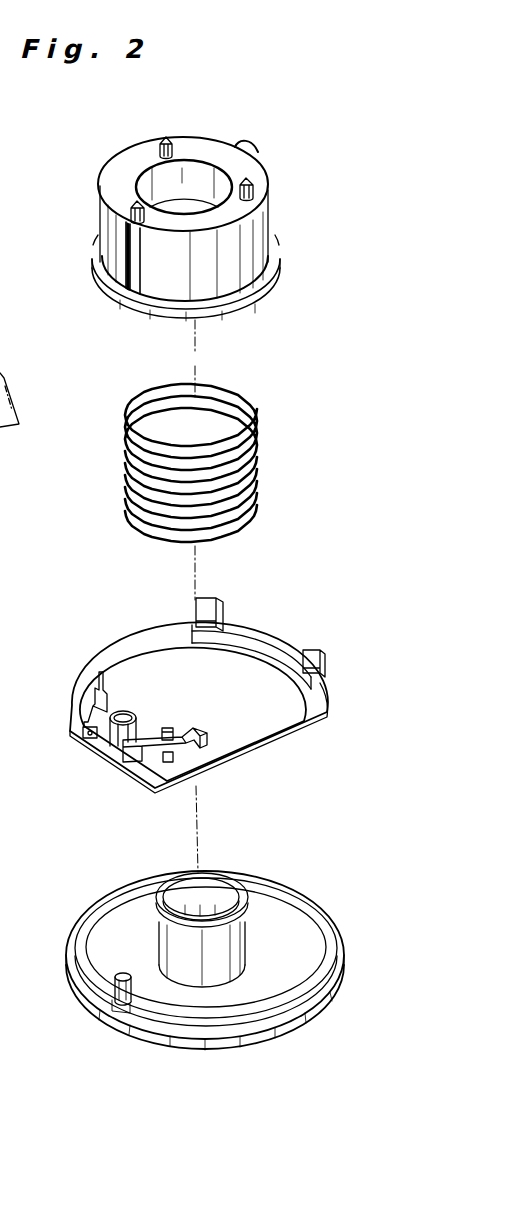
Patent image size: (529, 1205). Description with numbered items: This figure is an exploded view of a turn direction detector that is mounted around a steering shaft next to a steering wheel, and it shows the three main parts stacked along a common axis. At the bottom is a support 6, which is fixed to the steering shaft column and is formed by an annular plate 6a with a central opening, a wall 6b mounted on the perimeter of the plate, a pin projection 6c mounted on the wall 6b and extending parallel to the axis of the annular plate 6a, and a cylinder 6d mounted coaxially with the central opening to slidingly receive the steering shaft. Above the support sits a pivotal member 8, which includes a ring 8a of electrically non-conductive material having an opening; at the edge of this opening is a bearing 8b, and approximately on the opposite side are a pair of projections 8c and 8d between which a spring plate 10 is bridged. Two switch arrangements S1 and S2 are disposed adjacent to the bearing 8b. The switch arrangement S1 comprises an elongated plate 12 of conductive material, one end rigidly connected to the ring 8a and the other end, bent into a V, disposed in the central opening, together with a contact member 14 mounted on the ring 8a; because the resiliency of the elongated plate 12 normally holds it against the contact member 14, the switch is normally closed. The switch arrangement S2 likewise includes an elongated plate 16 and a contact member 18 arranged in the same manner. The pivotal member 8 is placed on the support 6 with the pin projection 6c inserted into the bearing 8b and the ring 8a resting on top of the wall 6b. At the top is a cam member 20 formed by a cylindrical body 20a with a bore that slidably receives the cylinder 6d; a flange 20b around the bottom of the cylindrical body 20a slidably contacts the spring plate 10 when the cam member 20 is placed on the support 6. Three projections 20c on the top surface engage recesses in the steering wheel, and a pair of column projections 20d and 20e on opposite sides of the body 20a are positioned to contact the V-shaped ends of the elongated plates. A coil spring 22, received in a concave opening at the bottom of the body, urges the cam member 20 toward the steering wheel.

The support 6 is at (65, 931).
The annular plate 6a is at (283, 1030).
The wall 6b is at (317, 917).
The pin projection 6c is at (112, 993).
The cylinder 6d is at (222, 882).
The pivotal member 8 is at (122, 637).
The ring 8a is at (302, 727).
The bearing 8b is at (110, 740).
The projection 8c is at (210, 605).
The projection 8d is at (312, 663).
The spring plate 10 is at (263, 640).
The elongated plate 12 is at (80, 732).
The contact member 14 is at (88, 697).
The elongated plate 16 is at (148, 750).
The contact member 18 is at (168, 730).
The switch arrangement S1 is at (72, 685).
The switch arrangement S2 is at (172, 765).
The cam member 20 is at (82, 197).
The cylindrical body 20a is at (235, 243).
The flange 20b is at (257, 277).
The projections 20c is at (133, 205).
The column projection 20d is at (118, 243).
The column projection 20e is at (245, 152).
The coil spring 22 is at (255, 437).